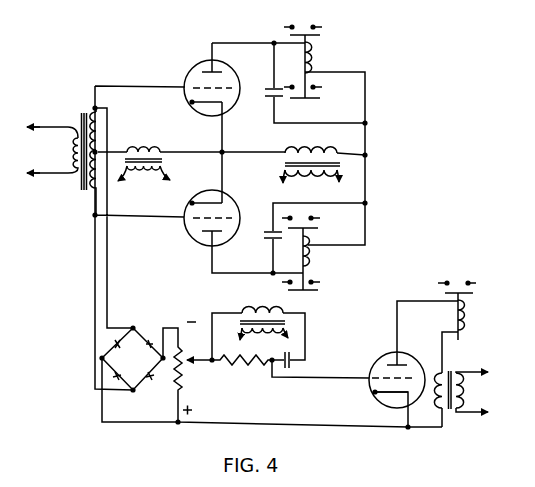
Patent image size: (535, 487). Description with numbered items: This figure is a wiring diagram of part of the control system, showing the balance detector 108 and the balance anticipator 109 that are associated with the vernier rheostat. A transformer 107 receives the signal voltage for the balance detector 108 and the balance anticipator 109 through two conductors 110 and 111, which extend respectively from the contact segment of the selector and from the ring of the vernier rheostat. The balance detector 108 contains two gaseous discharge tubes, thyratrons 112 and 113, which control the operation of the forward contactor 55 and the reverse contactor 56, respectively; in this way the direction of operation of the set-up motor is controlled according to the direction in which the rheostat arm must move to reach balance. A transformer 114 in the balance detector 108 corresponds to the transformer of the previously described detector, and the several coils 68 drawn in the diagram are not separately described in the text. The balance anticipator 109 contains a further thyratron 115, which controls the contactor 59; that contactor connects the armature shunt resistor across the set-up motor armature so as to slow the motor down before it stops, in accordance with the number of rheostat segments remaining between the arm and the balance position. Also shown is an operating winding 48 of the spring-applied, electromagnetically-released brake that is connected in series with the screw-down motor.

The balance detector 108 is at (168, 52).
The balance anticipator 109 is at (177, 308).
The transformer 107 is at (61, 158).
The conductor 110 is at (45, 127).
The conductor 111 is at (39, 173).
The thyratron 112 is at (225, 111).
The thyratron 113 is at (189, 236).
The transformer 114 is at (167, 160).
The thyratron 115 is at (375, 362).
The coil 68 is at (229, 249).
The forward contactor 55 is at (318, 54).
The reverse contactor 56 is at (318, 262).
The contactor 59 is at (473, 312).
The operating winding 48 is at (473, 409).